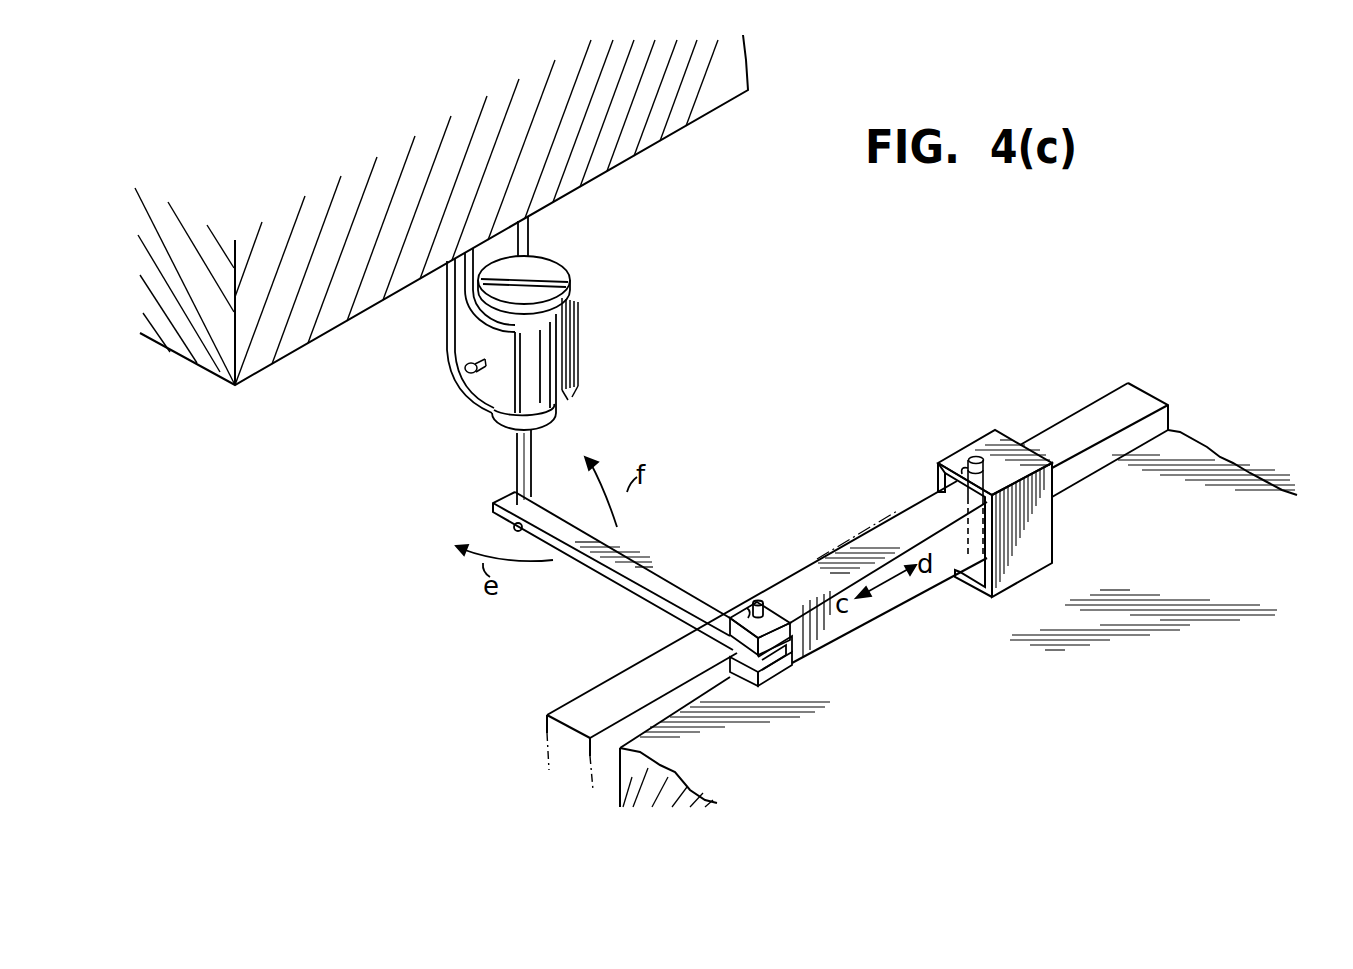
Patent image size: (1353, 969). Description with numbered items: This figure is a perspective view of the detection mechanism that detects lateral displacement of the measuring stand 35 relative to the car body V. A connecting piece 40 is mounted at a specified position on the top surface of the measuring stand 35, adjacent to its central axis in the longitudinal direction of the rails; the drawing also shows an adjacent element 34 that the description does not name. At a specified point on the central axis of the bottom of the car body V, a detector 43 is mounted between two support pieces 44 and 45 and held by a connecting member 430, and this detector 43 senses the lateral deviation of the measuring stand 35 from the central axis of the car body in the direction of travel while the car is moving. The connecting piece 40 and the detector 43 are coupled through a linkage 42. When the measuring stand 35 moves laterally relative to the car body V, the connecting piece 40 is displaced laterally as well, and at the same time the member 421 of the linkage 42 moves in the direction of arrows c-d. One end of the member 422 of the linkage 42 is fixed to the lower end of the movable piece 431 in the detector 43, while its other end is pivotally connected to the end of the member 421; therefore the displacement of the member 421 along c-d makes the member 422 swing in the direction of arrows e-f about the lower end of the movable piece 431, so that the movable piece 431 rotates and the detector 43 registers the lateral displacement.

The car body V is at (675, 125).
The guide rail 34 is at (1118, 392).
The measuring stand 35 is at (1205, 455).
The connecting piece 40 is at (1043, 540).
The linkage 42 is at (690, 565).
The member of the linkage 421 is at (867, 612).
The member of the linkage 422 is at (663, 608).
The detector 43 is at (546, 390).
The connecting member 430 is at (465, 368).
The movable piece 431 is at (517, 482).
The support piece 44 is at (483, 393).
The support piece 45 is at (576, 337).